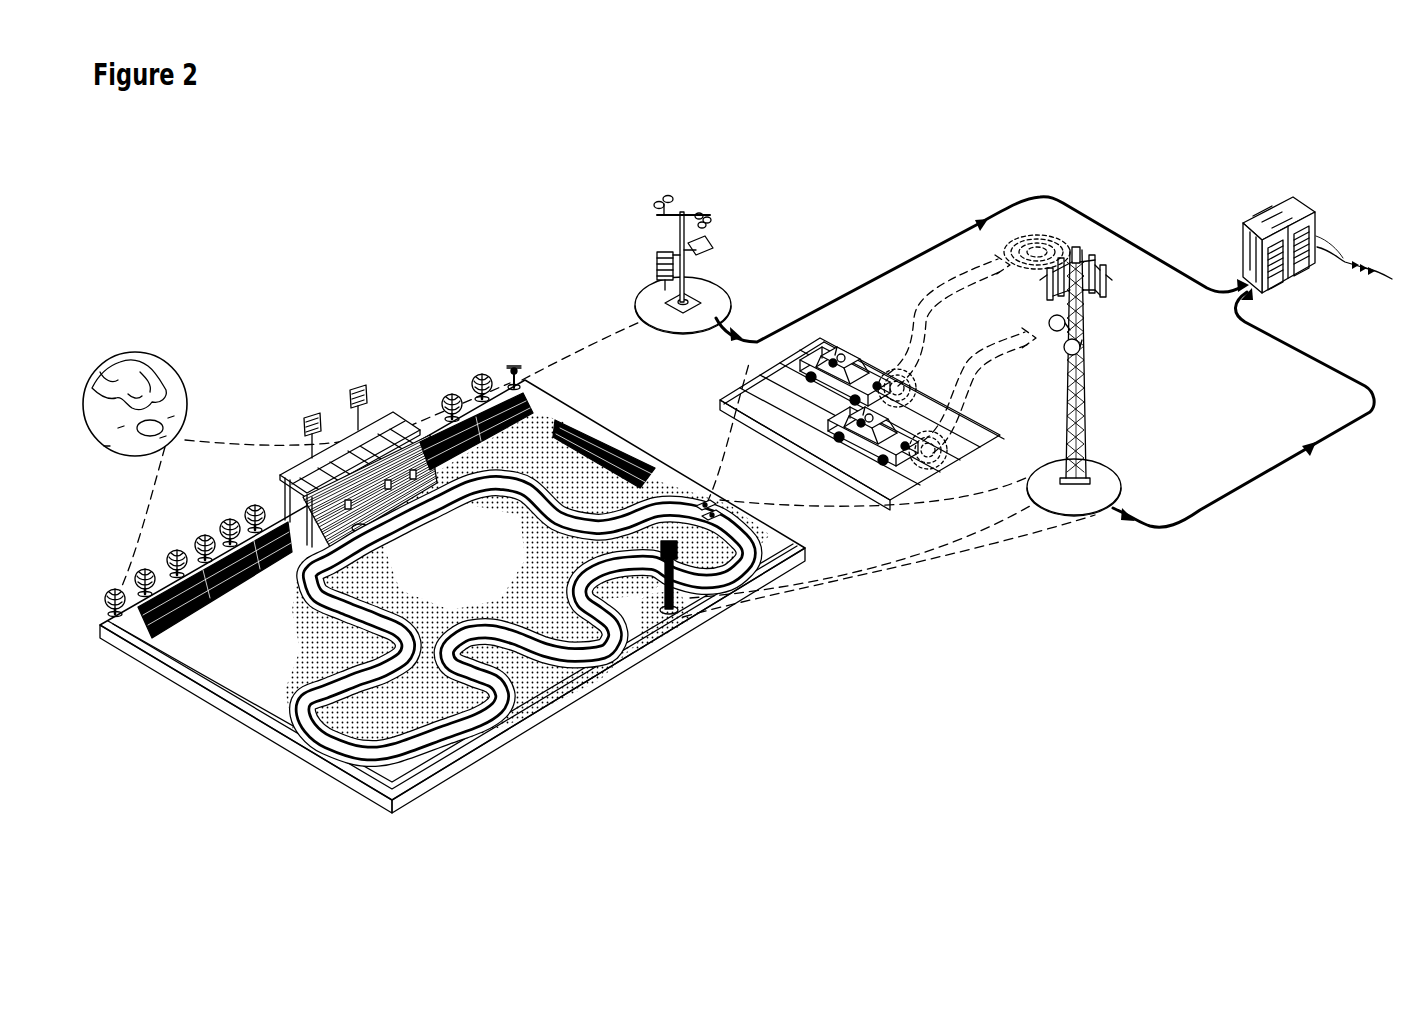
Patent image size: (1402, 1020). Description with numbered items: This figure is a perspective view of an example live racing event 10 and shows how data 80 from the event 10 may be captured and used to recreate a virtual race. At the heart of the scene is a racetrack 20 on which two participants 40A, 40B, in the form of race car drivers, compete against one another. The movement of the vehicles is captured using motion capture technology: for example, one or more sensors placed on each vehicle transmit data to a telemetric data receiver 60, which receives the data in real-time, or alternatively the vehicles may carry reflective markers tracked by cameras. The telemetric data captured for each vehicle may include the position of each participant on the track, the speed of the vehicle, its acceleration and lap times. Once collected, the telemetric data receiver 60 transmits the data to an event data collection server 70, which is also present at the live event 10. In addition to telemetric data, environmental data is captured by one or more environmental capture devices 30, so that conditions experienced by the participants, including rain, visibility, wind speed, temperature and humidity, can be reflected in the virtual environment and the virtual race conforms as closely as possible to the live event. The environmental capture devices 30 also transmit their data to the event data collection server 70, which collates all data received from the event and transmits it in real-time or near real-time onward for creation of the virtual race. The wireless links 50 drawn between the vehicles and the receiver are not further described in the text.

The live racing event 10 is at (160, 445).
The racetrack 20 is at (572, 655).
The environmental capture device 30 is at (683, 242).
The participant 40A is at (853, 378).
The participant 40B is at (868, 455).
The wireless communication link 50 is at (928, 322).
The telemetric data receiver 60 is at (1090, 392).
The event data collection server 70 is at (1243, 262).
The data 80 is at (1333, 254).